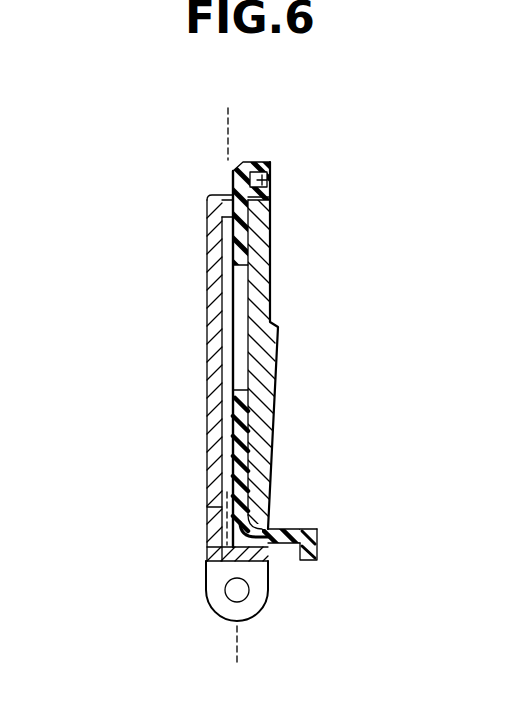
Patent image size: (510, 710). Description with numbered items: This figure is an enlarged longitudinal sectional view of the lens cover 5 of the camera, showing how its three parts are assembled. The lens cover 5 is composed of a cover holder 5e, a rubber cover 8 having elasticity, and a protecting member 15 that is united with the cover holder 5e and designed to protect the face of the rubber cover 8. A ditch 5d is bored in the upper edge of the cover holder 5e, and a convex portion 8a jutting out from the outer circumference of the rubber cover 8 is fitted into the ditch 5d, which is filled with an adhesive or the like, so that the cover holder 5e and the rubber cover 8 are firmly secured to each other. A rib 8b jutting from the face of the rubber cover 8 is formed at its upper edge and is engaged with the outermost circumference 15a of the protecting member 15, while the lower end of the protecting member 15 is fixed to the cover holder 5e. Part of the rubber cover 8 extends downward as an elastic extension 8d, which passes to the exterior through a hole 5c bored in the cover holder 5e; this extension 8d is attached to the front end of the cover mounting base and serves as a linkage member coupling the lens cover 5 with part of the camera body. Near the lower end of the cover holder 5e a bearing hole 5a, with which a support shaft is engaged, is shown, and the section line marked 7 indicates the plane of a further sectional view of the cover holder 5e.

The lens cover 5 is at (312, 345).
The bearing holes 5a is at (246, 598).
The hole 5c is at (272, 525).
The ditch 5d is at (255, 203).
The cover holder 5e is at (256, 458).
The section line 7- 7 is at (220, 121).
The rubber cover 8 is at (246, 161).
The convex portion 8a is at (263, 181).
The rib 8b is at (222, 214).
The extension 8d is at (318, 548).
The protecting member 15 is at (210, 420).
The outermost circumference 15a is at (212, 196).